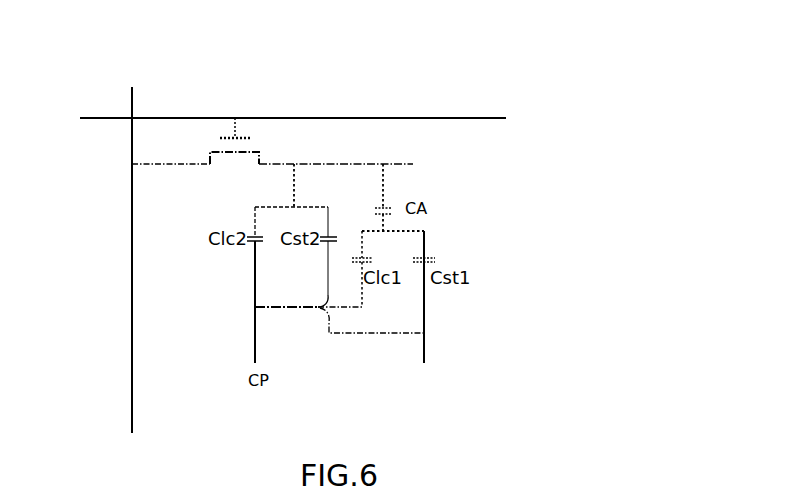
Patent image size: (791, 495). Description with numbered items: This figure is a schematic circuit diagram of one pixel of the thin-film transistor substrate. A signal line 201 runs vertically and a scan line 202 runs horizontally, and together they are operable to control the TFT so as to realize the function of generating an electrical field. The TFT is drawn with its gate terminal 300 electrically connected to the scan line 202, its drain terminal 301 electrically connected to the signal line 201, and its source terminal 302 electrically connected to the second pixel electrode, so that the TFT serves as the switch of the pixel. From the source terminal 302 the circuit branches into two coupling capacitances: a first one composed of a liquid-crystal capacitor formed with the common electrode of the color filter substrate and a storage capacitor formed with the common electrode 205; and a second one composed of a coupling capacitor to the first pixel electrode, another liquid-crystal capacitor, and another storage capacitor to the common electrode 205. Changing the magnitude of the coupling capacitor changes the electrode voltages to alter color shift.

The signal line 201 is at (132, 98).
The scan line 202 is at (90, 118).
The drain terminal 301 is at (147, 162).
The gate terminal 300 is at (235, 118).
The source terminal 302 is at (325, 164).
The common electrode 205 is at (424, 353).